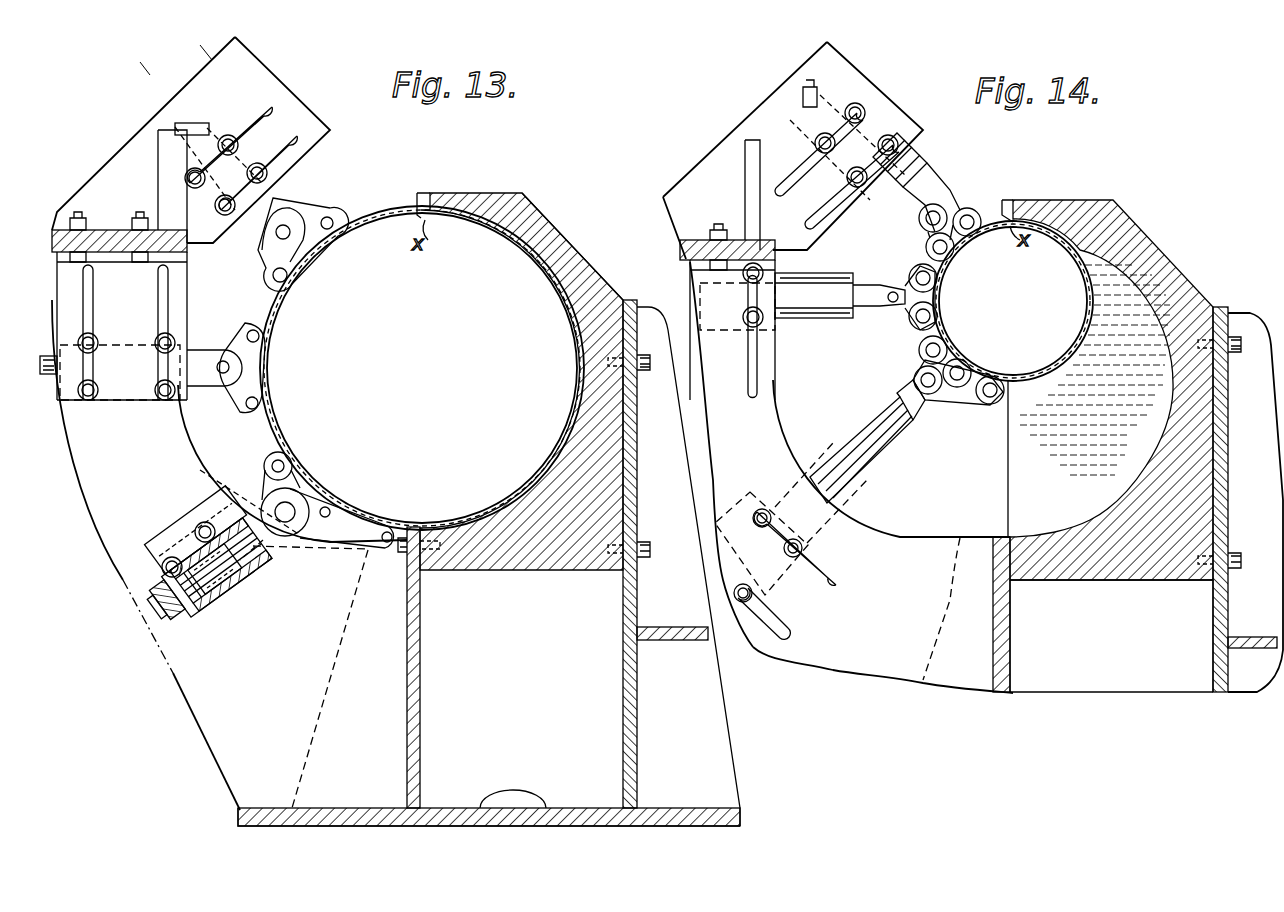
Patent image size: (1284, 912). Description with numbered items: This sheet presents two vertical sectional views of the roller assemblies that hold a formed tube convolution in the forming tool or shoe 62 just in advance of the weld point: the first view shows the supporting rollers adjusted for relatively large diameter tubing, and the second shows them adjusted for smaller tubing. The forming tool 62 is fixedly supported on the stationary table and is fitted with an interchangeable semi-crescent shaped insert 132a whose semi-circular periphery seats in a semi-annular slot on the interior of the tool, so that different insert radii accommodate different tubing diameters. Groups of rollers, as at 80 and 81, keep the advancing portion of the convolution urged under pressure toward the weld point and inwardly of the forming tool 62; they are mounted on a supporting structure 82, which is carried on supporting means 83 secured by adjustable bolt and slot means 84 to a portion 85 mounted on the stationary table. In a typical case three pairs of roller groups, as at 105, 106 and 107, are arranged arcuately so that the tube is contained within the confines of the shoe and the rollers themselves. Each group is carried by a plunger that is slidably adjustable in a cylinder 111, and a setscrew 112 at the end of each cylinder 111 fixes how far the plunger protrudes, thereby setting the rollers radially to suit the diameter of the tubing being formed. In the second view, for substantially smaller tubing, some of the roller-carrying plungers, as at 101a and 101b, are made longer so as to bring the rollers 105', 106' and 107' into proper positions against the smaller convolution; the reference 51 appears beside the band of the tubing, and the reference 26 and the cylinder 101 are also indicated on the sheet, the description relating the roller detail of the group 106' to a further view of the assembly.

In FIG. 13, the bolt pattern / mounting location 26 is at (152, 383).
In FIG. 13, the ring band 51 is at (284, 322).
In FIG. 14, the ring band 51 is at (983, 222).
In FIG. 13, the forming tool 62 is at (508, 193).
In FIG. 14, the forming tool 62 is at (1113, 204).
In FIG. 13, the group of rollers 80 is at (266, 485).
In FIG. 13, the group of rollers 81 is at (319, 213).
In FIG. 13, the supporting structure 82 is at (227, 243).
In FIG. 13, the supporting means 83 is at (200, 438).
In FIG. 13, the adjustable bolt and slot means 84 is at (80, 222).
In FIG. 13, the portion mounted on stationary table means 85 is at (238, 790).
In FIG. 13, the cylinder actuator 101 is at (258, 582).
In FIG. 13, the group of rollers 105 is at (320, 273).
In FIG. 13, the group of rollers 106 is at (265, 368).
In FIG. 13, the group of rollers 107 is at (328, 492).
In FIG. 13, the cylinder 111 is at (228, 596).
In FIG. 13, the setscrew 112 is at (56, 375).
In FIG. 13, the semi-crescent shaped insert 132a is at (540, 256).
In FIG. 14, the roller-carrying plunger 101a is at (842, 320).
In FIG. 14, the roller-carrying plunger 101b is at (880, 455).
In FIG. 14, the rollers 105' is at (942, 205).
In FIG. 14, the rollers 106' is at (955, 297).
In FIG. 14, the rollers 107' is at (973, 367).